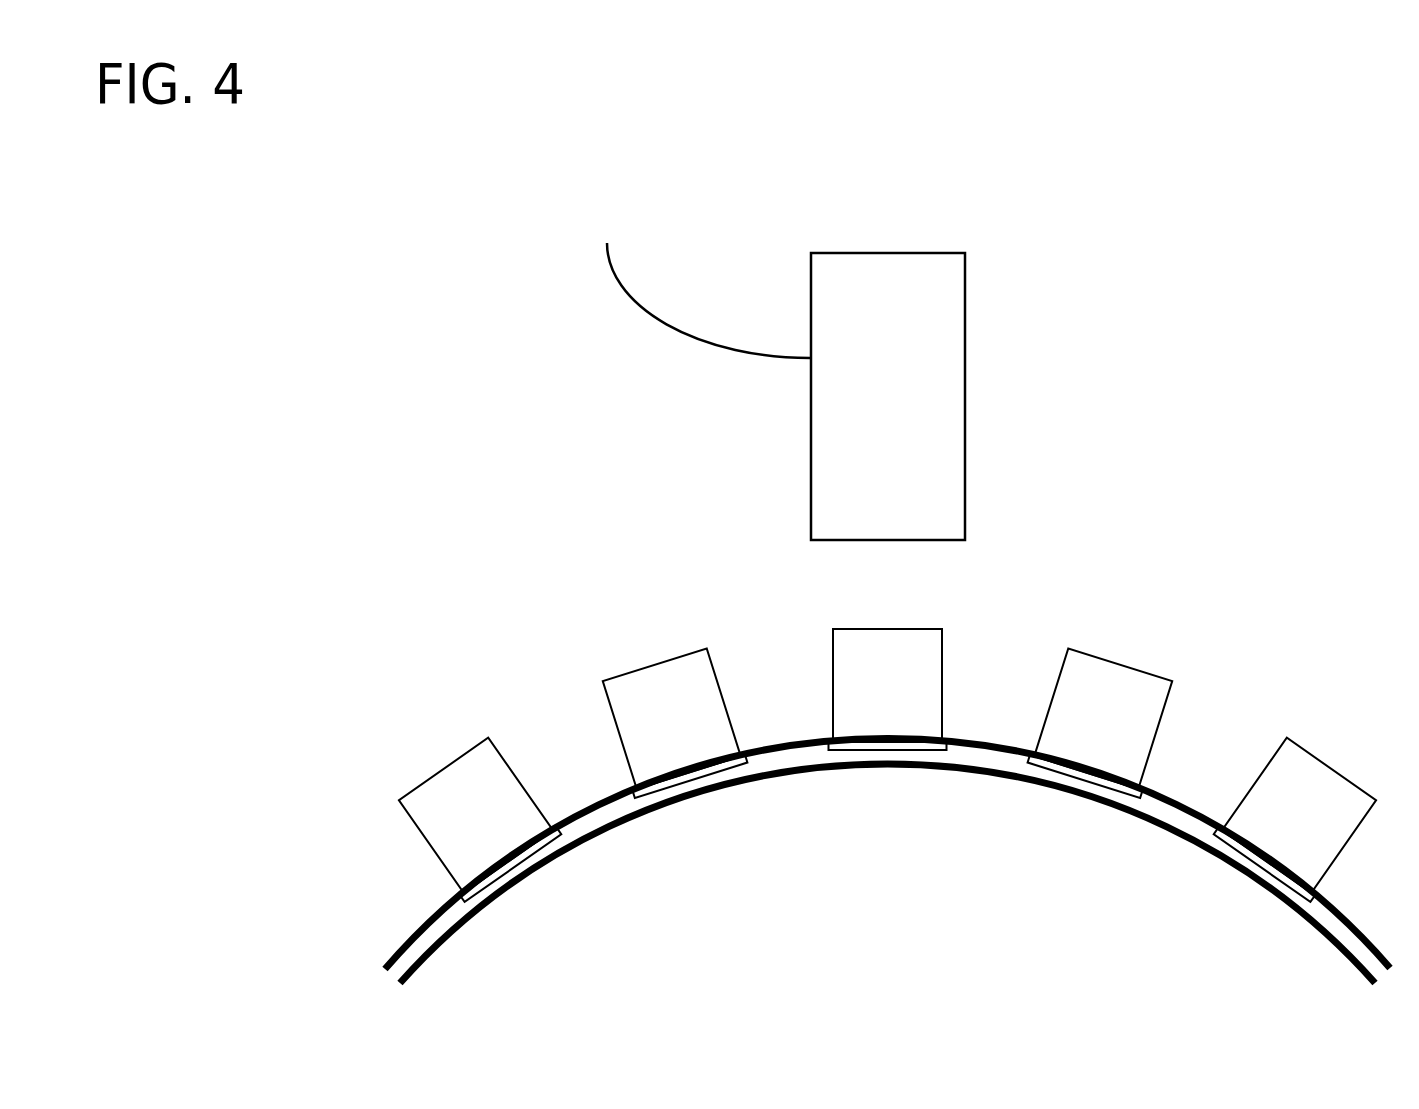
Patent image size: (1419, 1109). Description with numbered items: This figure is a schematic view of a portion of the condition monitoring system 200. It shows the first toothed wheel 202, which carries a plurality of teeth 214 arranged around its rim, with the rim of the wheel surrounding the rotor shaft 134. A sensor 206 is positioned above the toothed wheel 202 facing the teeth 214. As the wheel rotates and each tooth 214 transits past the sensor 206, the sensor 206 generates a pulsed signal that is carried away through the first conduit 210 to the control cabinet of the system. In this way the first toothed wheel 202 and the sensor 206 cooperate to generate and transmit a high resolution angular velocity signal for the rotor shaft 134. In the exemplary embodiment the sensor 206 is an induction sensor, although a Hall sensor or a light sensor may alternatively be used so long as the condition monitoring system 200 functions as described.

The condition monitoring system 200 is at (343, 277).
The first toothed wheel 202 is at (347, 745).
The sensor 206 is at (965, 332).
The first conduit 210 is at (667, 323).
The teeth 214 is at (655, 663).
The rotor shaft 134 is at (913, 928).